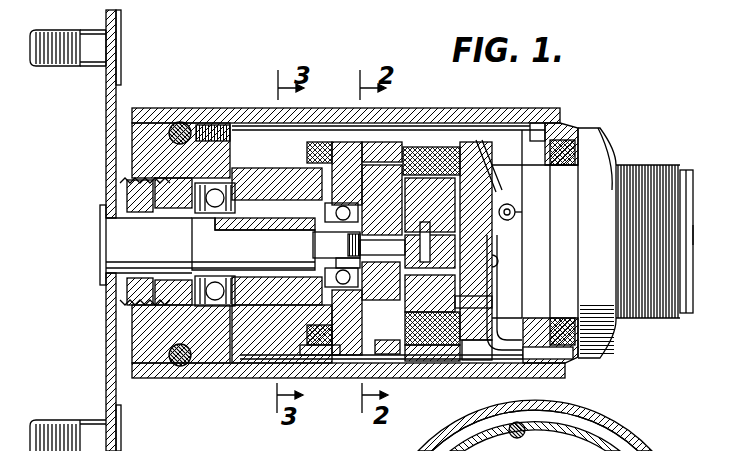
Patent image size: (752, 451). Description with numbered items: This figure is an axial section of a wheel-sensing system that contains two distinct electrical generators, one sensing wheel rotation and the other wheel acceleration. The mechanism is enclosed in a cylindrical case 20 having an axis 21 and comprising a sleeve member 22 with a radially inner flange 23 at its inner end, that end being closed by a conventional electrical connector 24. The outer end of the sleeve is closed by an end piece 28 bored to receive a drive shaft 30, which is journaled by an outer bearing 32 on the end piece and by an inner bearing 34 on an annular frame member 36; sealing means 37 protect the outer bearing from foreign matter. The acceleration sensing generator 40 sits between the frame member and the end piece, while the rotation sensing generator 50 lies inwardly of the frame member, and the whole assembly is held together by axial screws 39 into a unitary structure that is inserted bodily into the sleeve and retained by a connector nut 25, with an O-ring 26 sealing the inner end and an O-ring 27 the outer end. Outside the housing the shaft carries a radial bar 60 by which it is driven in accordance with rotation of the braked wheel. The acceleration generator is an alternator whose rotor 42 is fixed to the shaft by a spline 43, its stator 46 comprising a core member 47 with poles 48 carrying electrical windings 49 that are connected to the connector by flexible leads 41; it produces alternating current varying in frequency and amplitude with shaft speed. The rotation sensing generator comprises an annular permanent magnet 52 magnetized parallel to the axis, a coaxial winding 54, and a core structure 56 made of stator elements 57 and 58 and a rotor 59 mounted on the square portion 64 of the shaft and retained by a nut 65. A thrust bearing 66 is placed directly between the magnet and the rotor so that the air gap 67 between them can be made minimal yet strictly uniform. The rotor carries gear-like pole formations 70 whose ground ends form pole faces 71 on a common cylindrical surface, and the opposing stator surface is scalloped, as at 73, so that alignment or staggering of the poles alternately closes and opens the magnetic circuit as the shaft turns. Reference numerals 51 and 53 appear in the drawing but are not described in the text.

The cylindrical case 20 is at (508, 124).
The axis 21 is at (694, 236).
The sleeve member 22 is at (440, 110).
The radially inner flange 23 is at (602, 155).
The electrical connector 24 is at (687, 170).
The connector nut 25 is at (660, 155).
The O-ring 26 is at (570, 141).
The O-ring 27 is at (186, 123).
The end piece 28 is at (147, 123).
The drive shaft 30 is at (108, 248).
The outer bearing 32 is at (277, 184).
The inner bearing 34 is at (328, 197).
The annular frame member 36 is at (347, 140).
The sealing means 37 is at (130, 292).
The axial screws 39 is at (540, 122).
The acceleration sensing generator 40 is at (283, 358).
The flexible leads 41 is at (525, 362).
The rotor 42 is at (295, 291).
The spline 43 is at (308, 232).
The stator 46 is at (310, 363).
The core member 47 is at (216, 378).
The poles 48 is at (262, 167).
The electrical windings 49 is at (347, 340).
The rotation sensing generator 50 is at (478, 355).
The contact 51 is at (516, 211).
The permanent magnet 52 is at (448, 241).
The washer 53 is at (342, 254).
The winding 54 is at (497, 350).
The core structure 56 is at (388, 345).
The stator element 57 is at (455, 355).
The stator element 58 is at (487, 206).
The rotor 59 is at (381, 281).
The radial bar 60 is at (106, 133).
The square portion 64 is at (366, 247).
The nut 65 is at (440, 242).
The thrust bearing 66 is at (431, 189).
The air gap 67 is at (382, 200).
The pole formations 70 is at (482, 300).
The pole faces 71 is at (432, 328).
The scalloped surface 73 is at (605, 440).